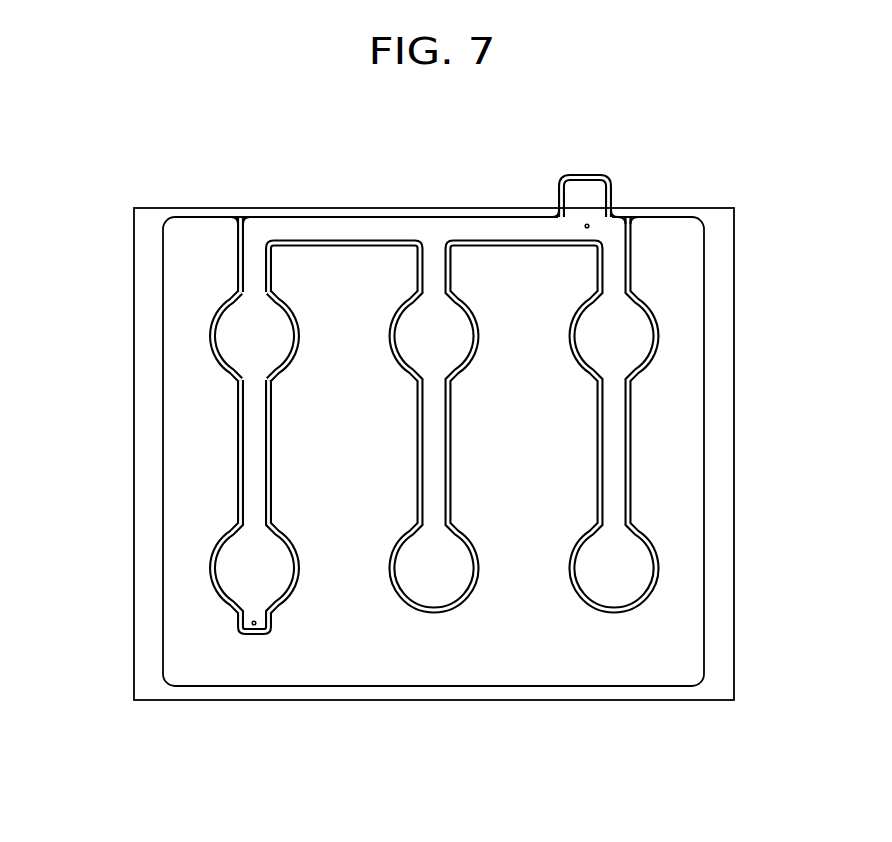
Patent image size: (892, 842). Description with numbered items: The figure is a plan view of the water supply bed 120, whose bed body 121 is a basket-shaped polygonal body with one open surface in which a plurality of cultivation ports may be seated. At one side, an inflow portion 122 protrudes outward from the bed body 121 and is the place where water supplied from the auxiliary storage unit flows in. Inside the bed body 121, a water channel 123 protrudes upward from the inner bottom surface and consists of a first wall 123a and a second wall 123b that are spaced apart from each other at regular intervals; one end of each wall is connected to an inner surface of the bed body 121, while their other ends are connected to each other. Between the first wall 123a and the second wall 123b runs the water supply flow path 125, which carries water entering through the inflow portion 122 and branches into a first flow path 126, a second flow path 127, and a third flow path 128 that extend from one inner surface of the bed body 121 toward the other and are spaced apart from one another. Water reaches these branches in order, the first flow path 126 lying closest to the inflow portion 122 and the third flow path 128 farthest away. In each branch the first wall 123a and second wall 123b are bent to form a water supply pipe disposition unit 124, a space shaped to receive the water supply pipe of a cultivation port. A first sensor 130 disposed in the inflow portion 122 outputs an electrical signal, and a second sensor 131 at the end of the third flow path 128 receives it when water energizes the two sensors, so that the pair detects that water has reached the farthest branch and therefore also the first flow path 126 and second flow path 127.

The water supply bed 120 is at (436, 426).
The bed body 121 is at (148, 431).
The inflow portion 122 is at (593, 190).
The water channel 123 is at (261, 206).
The first wall 123a is at (243, 245).
The second wall 123b is at (252, 277).
The water supply pipe disposition unit 124 is at (212, 333).
The water supply flow path 125 is at (491, 228).
The first flow path 126 is at (614, 272).
The second flow path 127 is at (430, 276).
The third flow path 128 is at (197, 376).
The first sensor 130 is at (590, 226).
The second sensor 131 is at (254, 626).